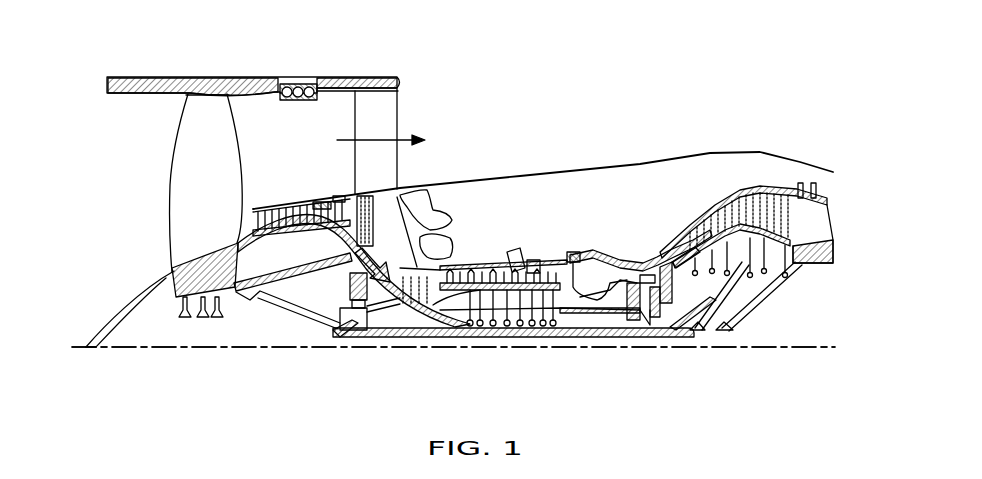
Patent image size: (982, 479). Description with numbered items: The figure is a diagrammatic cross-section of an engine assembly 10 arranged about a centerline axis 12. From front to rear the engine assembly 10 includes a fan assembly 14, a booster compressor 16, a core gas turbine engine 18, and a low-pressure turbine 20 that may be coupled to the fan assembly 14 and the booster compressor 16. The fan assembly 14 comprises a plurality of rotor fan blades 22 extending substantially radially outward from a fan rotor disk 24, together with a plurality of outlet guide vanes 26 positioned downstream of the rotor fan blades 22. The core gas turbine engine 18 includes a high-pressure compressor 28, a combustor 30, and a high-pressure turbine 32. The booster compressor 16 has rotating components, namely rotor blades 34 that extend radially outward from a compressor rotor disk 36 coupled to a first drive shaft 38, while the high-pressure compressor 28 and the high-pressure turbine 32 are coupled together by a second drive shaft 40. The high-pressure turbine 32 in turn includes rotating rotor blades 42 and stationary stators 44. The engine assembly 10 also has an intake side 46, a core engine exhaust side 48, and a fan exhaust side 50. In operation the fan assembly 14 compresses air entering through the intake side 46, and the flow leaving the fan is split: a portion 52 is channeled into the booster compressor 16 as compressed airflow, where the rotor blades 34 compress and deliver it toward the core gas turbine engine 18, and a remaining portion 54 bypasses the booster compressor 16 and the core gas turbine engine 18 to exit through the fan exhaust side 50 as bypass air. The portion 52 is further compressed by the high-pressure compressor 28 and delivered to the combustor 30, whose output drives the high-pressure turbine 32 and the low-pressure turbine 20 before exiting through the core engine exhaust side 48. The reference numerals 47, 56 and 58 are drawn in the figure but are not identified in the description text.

The engine assembly 10 is at (665, 50).
The centerline axis 12 is at (199, 349).
The fan assembly 14 is at (155, 166).
The booster compressor 16 is at (288, 208).
The core gas turbine engine 18 is at (506, 228).
The low-pressure turbine 20 is at (773, 187).
The rotor fan blades 22 is at (190, 126).
The fan rotor disk 24 is at (171, 273).
The outlet guide vanes 26 is at (383, 155).
The high-pressure compressor 28 is at (432, 272).
The combustor 30 is at (593, 285).
The high-pressure turbine 32 is at (623, 338).
The rotor blades 34 is at (275, 207).
The compressor rotor disk 36 is at (280, 243).
The first drive shaft 38 is at (343, 338).
The second drive shaft 40 is at (597, 338).
The rotor blades 42 is at (628, 258).
The stators 44 is at (653, 273).
The intake side 46 is at (110, 113).
The mount bracket 47 is at (336, 195).
The core engine exhaust side 48 is at (845, 204).
The fan exhaust side 50 is at (415, 99).
The portion of the airflow 52 is at (290, 77).
The remaining portion of the airflow 54 is at (165, 77).
The attachment bracket 56 is at (322, 200).
The bypass duct outer wall 58 is at (547, 182).